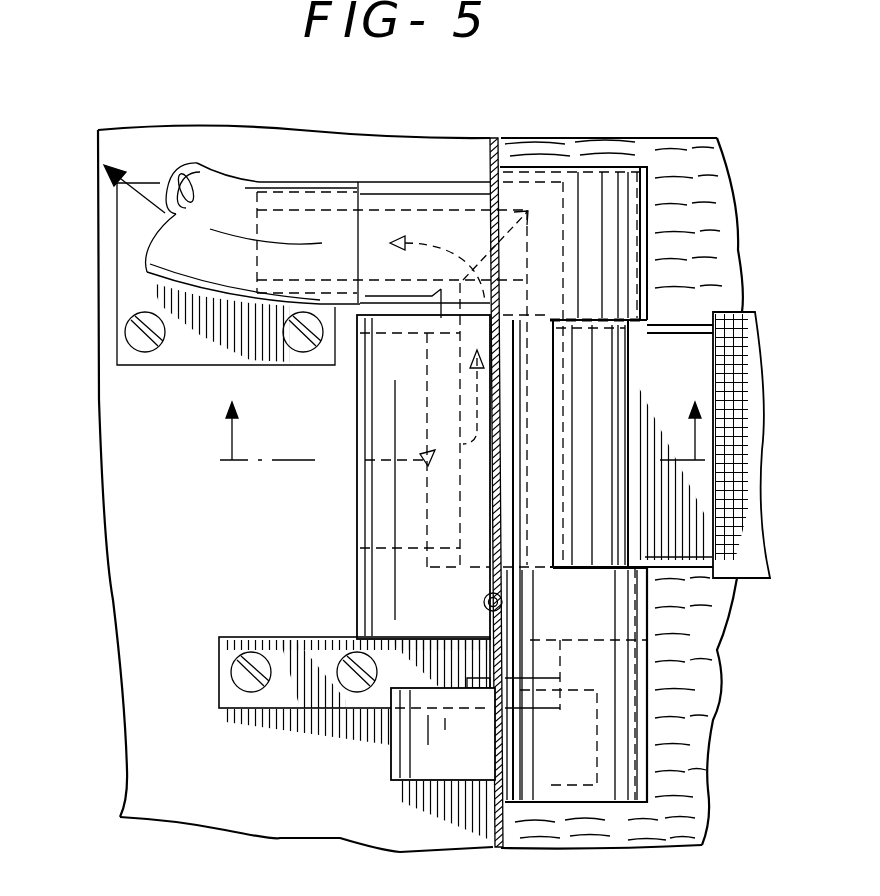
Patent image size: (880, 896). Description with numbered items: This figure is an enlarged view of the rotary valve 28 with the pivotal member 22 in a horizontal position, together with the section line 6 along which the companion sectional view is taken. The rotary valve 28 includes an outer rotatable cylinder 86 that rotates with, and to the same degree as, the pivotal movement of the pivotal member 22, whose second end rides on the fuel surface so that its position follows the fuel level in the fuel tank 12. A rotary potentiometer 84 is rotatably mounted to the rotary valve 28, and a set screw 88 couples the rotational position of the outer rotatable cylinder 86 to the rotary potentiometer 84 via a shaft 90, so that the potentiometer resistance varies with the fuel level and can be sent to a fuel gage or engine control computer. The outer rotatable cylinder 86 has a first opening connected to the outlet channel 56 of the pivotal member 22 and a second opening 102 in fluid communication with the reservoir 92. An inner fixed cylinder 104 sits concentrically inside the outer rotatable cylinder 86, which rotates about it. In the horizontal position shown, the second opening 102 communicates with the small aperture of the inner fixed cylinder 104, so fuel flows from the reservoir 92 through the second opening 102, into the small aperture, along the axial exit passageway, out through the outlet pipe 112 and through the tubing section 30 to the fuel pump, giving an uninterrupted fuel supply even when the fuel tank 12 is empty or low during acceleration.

The section line 6 is at (462, 453).
The fuel tank 12 is at (700, 718).
The pivotal member 22 is at (755, 348).
The rotary valve 28 is at (686, 268).
The tubing section 30 is at (240, 197).
The outlet channel 56 is at (684, 525).
The rotary potentiometer 84 is at (435, 765).
The outer rotatable cylinder 86 is at (368, 588).
The set screw 88 is at (484, 602).
The shaft 90 is at (480, 667).
The reservoir 92 is at (152, 623).
The second opening 102 is at (385, 410).
The inner fixed cylinder 104 is at (447, 520).
The outlet pipe 112 is at (425, 192).